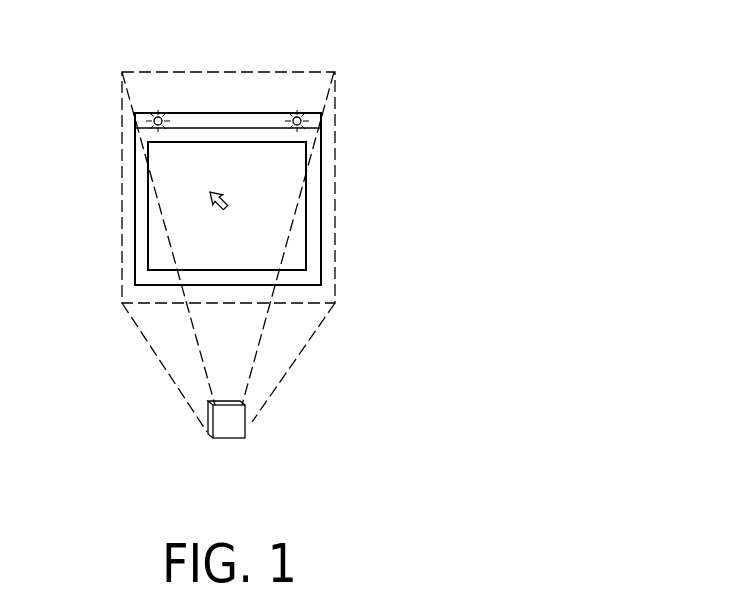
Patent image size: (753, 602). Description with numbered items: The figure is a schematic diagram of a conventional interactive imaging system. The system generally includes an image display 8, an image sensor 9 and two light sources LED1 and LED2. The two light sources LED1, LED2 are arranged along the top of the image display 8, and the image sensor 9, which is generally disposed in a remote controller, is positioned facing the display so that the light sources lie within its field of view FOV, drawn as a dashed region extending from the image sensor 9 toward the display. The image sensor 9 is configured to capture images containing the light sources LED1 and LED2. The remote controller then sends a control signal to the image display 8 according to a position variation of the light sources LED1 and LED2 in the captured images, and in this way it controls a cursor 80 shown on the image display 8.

The field of view of camera FOV is at (241, 218).
The image display 8 is at (321, 273).
The light source LED1 is at (153, 121).
The light source LED2 is at (303, 120).
The cursor 80 is at (207, 196).
The image sensor 9 is at (235, 427).